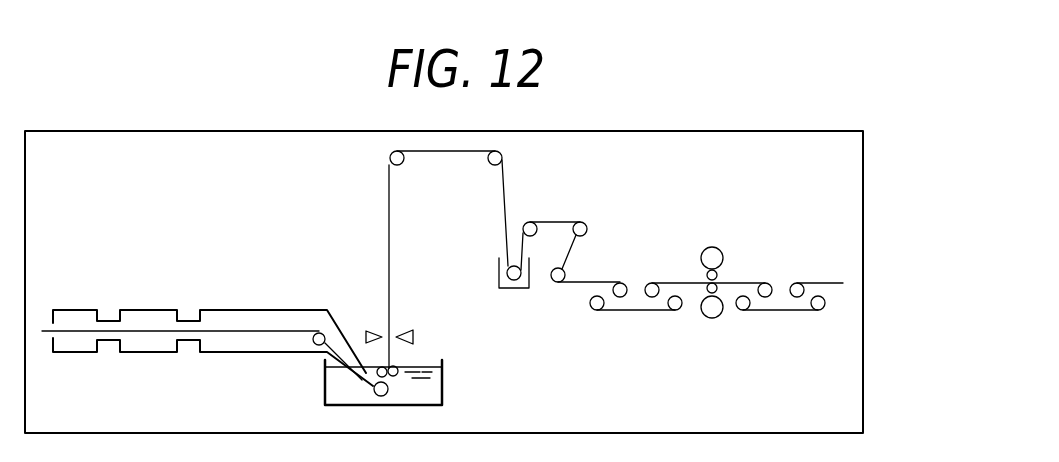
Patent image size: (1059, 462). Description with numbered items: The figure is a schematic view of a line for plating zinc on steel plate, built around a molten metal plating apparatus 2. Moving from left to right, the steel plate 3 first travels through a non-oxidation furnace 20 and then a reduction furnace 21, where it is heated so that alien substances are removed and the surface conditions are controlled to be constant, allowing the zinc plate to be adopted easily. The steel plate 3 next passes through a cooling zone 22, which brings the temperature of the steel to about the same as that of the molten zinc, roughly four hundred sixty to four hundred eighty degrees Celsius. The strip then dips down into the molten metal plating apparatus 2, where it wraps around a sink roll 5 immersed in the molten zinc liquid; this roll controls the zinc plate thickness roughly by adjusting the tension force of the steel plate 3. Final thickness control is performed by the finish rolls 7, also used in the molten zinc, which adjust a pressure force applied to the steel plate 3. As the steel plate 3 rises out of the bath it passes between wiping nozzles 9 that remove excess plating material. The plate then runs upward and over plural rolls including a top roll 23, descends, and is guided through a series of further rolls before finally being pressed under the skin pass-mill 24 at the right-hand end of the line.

The molten metal plating apparatus 2 is at (324, 392).
The steel plate 3 is at (389, 226).
The sink roll 5 is at (402, 390).
The finish rolls 7 is at (400, 361).
The wiping nozzles 9 is at (398, 318).
The non-oxidation furnace 20 is at (72, 310).
The reduction furnace 21 is at (147, 310).
The cooling zone 22 is at (260, 310).
The top roll 23 is at (389, 159).
The skin pass-mill 24 is at (704, 240).